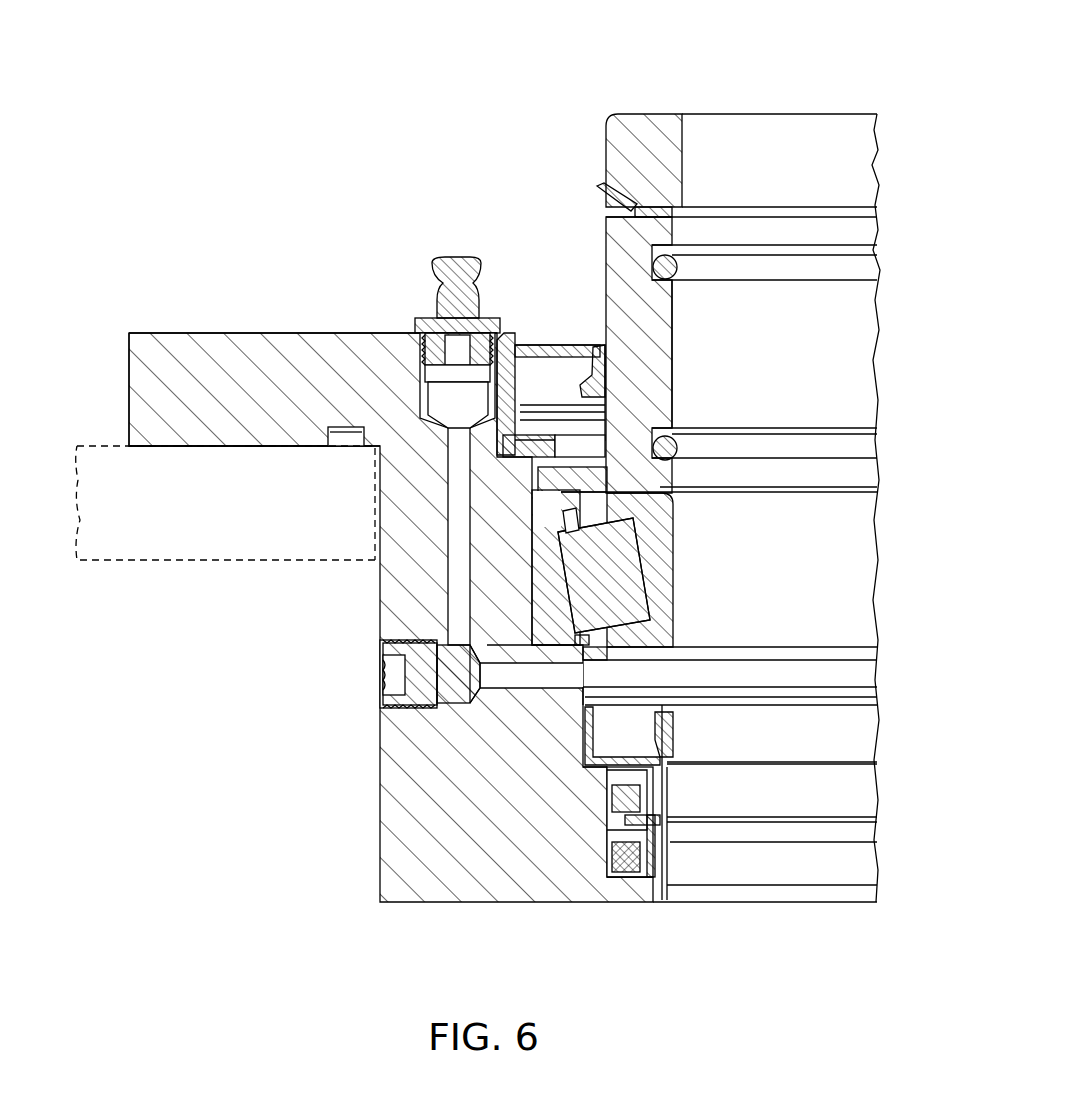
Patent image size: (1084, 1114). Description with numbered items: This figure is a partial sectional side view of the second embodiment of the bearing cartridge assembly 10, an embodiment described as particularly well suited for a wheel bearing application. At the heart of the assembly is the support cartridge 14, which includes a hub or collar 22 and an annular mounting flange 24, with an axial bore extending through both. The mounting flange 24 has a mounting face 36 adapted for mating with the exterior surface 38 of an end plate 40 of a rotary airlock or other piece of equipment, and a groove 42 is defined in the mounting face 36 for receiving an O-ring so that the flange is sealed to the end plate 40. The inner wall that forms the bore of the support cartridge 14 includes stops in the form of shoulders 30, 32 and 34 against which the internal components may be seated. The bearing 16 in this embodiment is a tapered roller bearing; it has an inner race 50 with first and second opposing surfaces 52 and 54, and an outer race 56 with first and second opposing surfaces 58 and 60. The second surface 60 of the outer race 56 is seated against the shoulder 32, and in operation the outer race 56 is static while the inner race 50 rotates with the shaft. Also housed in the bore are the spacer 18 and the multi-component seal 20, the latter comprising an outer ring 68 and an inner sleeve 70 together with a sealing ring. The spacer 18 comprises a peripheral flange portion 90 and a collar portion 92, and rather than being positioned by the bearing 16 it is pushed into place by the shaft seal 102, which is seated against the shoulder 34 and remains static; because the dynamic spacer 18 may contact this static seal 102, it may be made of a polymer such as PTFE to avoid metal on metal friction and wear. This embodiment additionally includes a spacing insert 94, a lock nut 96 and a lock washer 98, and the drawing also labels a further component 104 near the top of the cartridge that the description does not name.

The bearing cartridge assembly 10 is at (785, 62).
The support cartridge 14 is at (348, 330).
The bearing 16 is at (845, 568).
The spacer 18 is at (845, 800).
The multi-component seal 20 is at (598, 852).
The collar 22 is at (378, 600).
The mounting flange 24 is at (128, 350).
The shoulder 30 is at (603, 868).
The shoulder 32 is at (545, 636).
The shoulder 34 is at (594, 768).
The mounting face 36 is at (212, 450).
The exterior surface 38 is at (98, 445).
The end plate 40 is at (172, 548).
The groove 42 is at (346, 447).
The inner race 50 is at (672, 578).
The first surface 52 is at (645, 488).
The second surface 54 is at (660, 650).
The outer race 56 is at (548, 570).
The first surface 58 is at (548, 530).
The second surface 60 is at (552, 650).
The outer ring 68 is at (602, 808).
The inner sleeve 70 is at (870, 832).
The peripheral flange portion 90 is at (640, 752).
The collar portion 92 is at (660, 796).
The spacing insert 94 is at (845, 345).
The lock nut 96 is at (845, 168).
The lock washer 98 is at (845, 210).
The shaft seal 102 is at (845, 735).
The cover 104 is at (540, 446).